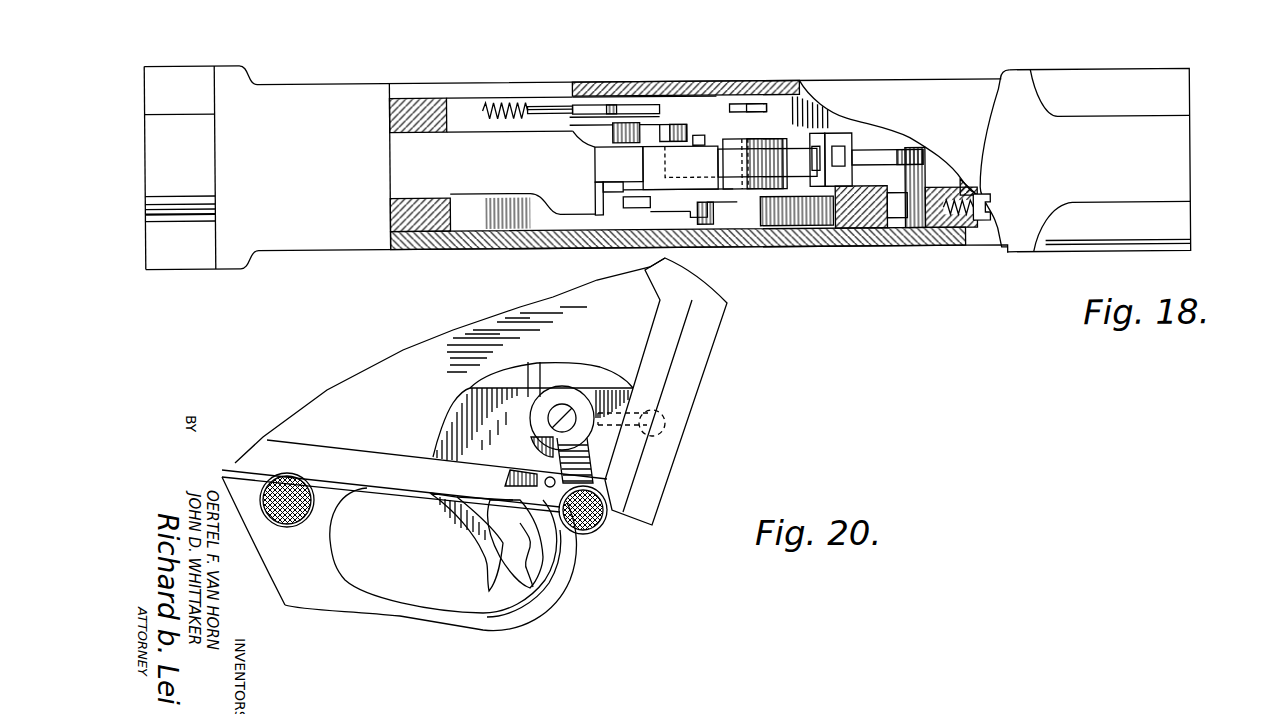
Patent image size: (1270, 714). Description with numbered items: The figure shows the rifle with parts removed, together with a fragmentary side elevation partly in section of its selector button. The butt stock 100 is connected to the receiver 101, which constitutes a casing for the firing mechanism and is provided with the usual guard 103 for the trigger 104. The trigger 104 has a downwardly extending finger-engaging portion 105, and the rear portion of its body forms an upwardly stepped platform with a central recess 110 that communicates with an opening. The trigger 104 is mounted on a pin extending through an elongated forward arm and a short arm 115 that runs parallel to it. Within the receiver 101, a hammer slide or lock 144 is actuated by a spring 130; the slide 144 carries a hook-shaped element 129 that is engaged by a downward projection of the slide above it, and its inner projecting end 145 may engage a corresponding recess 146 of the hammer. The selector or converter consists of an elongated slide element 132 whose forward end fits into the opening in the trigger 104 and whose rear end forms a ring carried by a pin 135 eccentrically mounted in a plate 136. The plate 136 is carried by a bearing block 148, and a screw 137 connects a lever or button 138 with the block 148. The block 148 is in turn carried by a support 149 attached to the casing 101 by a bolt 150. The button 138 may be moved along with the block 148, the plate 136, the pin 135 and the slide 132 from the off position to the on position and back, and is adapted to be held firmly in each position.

In FIG. 18, the butt stock 100 is at (1167, 84).
In FIG. 20, the butt stock 100 is at (700, 342).
In FIG. 18, the receiver 101 is at (827, 84).
In FIG. 20, the guard 103 is at (433, 615).
In FIG. 18, the trigger 104 is at (803, 179).
In FIG. 20, the trigger 104 is at (482, 545).
In FIG. 20, the finger-engaging portion 105 is at (493, 577).
In FIG. 18, the central recess 110 is at (842, 140).
In FIG. 18, the short arm 115 is at (632, 210).
In FIG. 18, the hook-shaped element 129 is at (555, 106).
In FIG. 18, the spring 130 is at (508, 100).
In FIG. 18, the slide element 132 is at (868, 150).
In FIG. 18, the pin 135 is at (907, 152).
In FIG. 18, the plate 136 is at (850, 230).
In FIG. 18, the screw 137 is at (912, 237).
In FIG. 20, the screw 137 is at (560, 410).
In FIG. 18, the lever or button 138 is at (925, 237).
In FIG. 20, the lever or button 138 is at (600, 527).
In FIG. 18, the hammer slide or lock 144 is at (603, 105).
In FIG. 18, the inner projecting end 145 is at (673, 125).
In FIG. 18, the recess 146 is at (702, 136).
In FIG. 18, the bearing block 148 is at (893, 222).
In FIG. 18, the support 149 is at (963, 237).
In FIG. 20, the support 149 is at (528, 397).
In FIG. 18, the bolt 150 is at (980, 237).
In FIG. 20, the bolt 150 is at (660, 430).